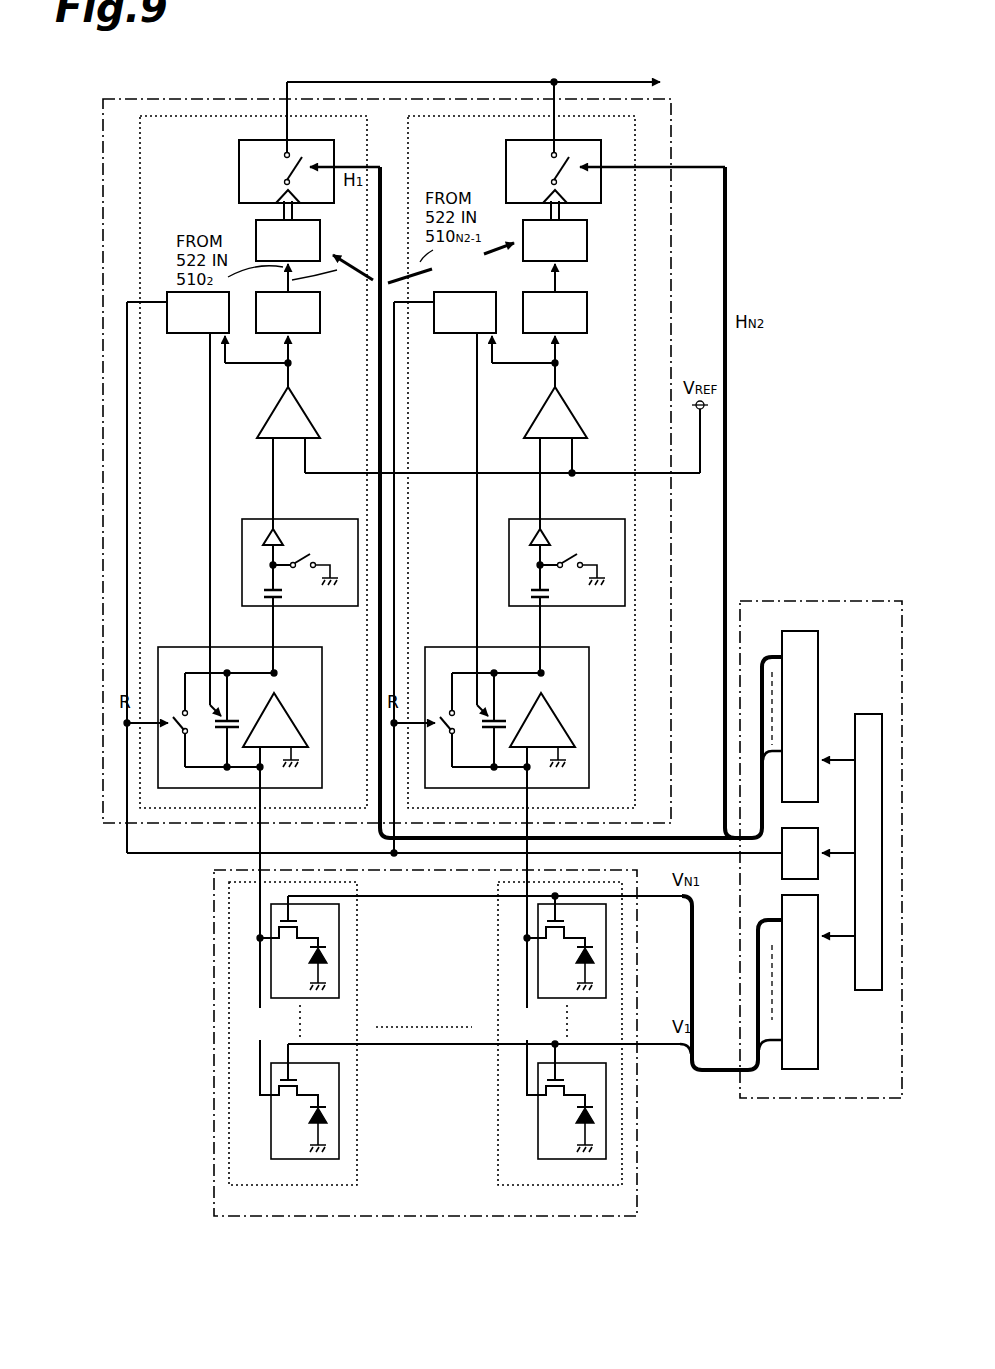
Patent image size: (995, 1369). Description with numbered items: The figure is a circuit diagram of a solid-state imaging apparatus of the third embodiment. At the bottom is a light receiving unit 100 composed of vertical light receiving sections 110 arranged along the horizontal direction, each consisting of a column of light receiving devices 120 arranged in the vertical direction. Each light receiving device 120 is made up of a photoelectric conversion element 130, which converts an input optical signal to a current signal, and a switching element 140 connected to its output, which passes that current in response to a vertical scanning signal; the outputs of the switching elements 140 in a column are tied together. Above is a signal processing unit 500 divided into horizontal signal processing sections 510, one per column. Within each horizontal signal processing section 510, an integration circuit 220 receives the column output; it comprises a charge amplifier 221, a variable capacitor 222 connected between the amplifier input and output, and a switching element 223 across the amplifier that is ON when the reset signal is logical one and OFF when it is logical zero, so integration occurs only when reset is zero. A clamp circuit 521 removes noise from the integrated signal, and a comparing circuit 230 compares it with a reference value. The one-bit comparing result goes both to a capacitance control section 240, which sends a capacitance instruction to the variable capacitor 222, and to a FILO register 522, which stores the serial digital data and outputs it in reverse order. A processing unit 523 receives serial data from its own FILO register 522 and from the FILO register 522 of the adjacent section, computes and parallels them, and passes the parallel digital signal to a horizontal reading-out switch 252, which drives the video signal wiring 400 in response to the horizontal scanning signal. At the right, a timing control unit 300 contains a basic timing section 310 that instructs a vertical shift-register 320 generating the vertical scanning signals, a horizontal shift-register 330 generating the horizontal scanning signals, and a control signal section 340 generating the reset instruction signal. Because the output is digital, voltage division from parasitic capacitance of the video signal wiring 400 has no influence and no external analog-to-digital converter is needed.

The light receiving unit 100 is at (637, 1178).
The vertical light receiving section 110 is at (358, 1175).
The light receiving device 120 is at (431, 1027).
The photoelectric conversion element 130 is at (335, 1112).
The switching element 140 is at (287, 1100).
The integration circuit 220 is at (371, 706).
The charge amplifier 221 is at (298, 720).
The variable capacitor 222 is at (235, 721).
The switching element 223 is at (183, 709).
The comparing circuit 230 is at (300, 405).
The capacitance control section 240 is at (175, 340).
The horizontal reading-out switch 252 is at (239, 173).
The timing control unit 300 is at (777, 601).
The basic timing section 310 is at (868, 990).
The vertical shift-register 320 is at (822, 1043).
The horizontal shift-register 330 is at (819, 655).
The control signal section 340 is at (782, 880).
The video signal wiring 400 is at (346, 75).
The signal processing unit 500 is at (178, 98).
The horizontal signal processing section 510 is at (140, 137).
The clamp circuit 521 is at (310, 519).
The FILO register 522 is at (321, 325).
The processing unit 523 is at (332, 218).